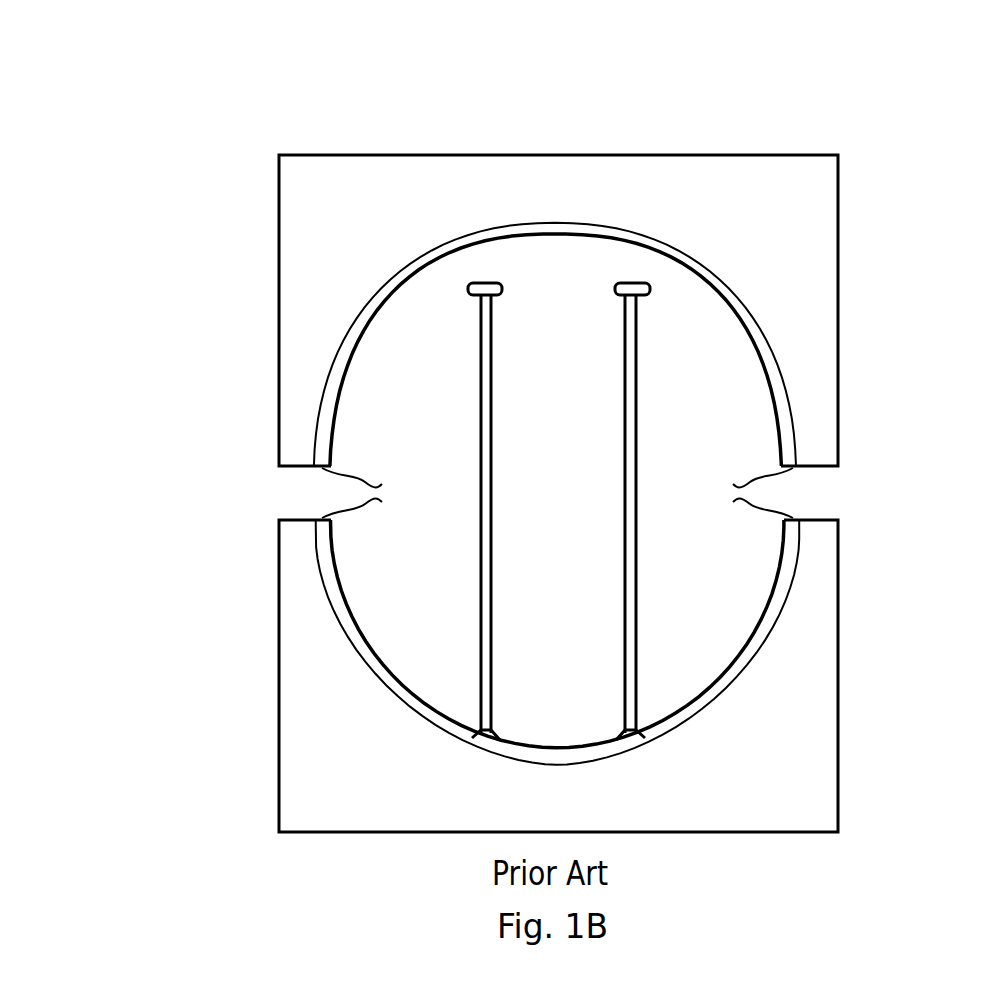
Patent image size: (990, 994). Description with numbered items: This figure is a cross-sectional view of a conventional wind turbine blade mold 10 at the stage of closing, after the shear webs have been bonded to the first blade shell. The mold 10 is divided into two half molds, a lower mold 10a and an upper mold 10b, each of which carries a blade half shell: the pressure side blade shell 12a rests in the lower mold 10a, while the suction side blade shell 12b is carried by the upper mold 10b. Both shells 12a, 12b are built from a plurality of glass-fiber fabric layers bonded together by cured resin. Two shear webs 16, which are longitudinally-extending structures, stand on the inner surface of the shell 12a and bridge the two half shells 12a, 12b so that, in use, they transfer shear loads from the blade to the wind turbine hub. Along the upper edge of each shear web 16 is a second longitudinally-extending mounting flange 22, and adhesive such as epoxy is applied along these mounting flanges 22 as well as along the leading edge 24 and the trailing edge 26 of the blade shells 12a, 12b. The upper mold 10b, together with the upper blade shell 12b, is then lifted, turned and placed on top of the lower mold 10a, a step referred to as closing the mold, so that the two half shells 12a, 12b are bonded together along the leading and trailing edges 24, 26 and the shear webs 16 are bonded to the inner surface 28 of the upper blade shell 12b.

The mold 10 is at (554, 427).
The lower mold 10a is at (821, 807).
The upper mold 10b is at (291, 183).
The pressure side blade shell 12a is at (746, 666).
The suction side blade shell 12b is at (555, 344).
The shear webs 16 is at (614, 554).
The second longitudinally-extending mounting flange 22 is at (476, 283).
The leading edge 24 is at (373, 493).
The trailing edge 26 is at (741, 493).
The inner surface 28 is at (370, 338).